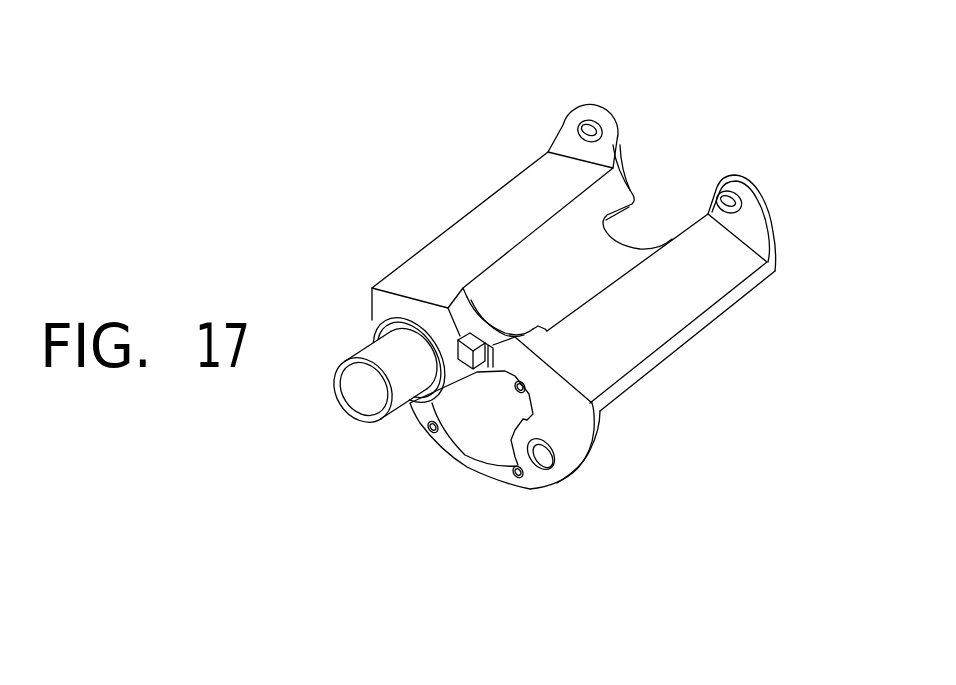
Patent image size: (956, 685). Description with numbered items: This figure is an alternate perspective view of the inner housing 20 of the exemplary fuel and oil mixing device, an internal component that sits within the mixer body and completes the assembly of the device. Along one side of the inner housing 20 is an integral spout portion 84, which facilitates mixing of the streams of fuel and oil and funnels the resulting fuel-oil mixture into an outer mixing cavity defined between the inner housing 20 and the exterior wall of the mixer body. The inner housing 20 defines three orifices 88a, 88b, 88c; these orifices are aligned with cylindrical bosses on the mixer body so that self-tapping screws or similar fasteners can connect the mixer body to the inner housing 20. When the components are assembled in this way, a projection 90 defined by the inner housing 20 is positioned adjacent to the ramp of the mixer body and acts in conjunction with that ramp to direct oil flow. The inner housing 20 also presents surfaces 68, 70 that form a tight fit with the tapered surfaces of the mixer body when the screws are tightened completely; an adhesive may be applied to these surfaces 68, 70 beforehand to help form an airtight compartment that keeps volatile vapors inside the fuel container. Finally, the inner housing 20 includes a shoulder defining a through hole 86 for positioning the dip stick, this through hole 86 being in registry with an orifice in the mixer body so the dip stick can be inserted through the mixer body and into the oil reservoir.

The inner housing 20 is at (519, 315).
The surface 68 is at (652, 318).
The surface 70 is at (485, 228).
The integral spout portion 84 is at (502, 406).
The through hole 86 is at (367, 392).
The orifice 88a is at (727, 203).
The orifice 88b is at (560, 130).
The orifice 88c is at (545, 457).
The projection 90 is at (470, 350).